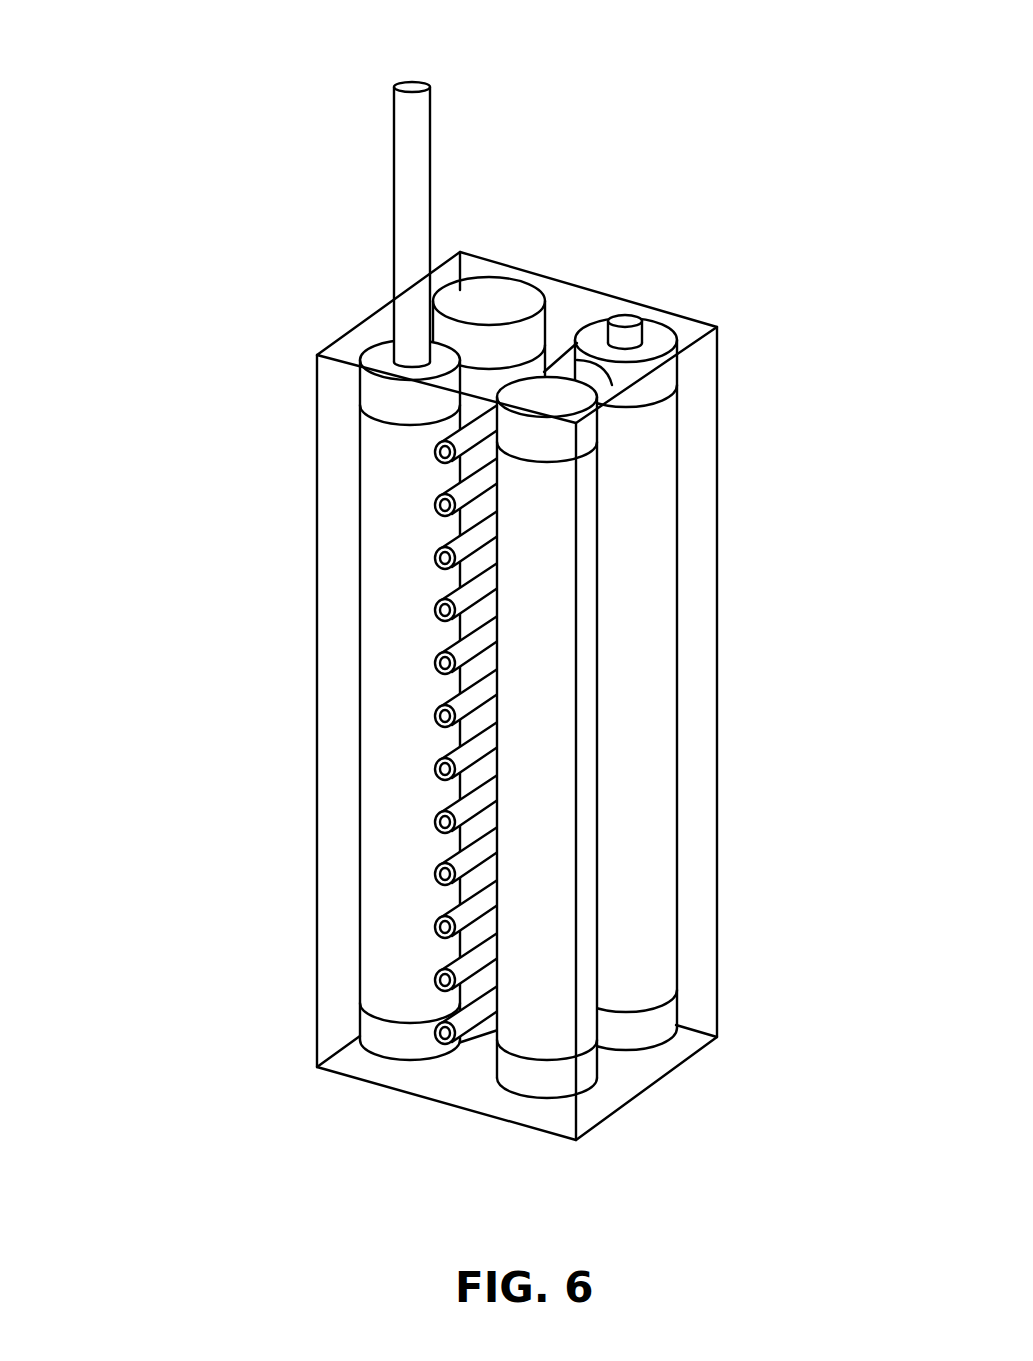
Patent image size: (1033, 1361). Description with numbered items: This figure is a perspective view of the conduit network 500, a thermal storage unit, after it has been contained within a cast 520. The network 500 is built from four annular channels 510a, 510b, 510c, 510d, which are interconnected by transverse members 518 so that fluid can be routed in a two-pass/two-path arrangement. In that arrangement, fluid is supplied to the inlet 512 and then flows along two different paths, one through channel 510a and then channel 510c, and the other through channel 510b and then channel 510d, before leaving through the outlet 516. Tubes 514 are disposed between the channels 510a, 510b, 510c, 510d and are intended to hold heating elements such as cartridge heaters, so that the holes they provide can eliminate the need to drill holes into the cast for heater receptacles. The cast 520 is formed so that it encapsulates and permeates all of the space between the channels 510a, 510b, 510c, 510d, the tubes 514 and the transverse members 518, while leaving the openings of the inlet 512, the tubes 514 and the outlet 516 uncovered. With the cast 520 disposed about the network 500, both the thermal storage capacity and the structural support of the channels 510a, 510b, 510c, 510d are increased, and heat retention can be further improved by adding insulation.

The conduit network 500 is at (182, 55).
The annular channel 510a is at (382, 853).
The annular channel 510b is at (488, 294).
The annular channel 510c is at (585, 1083).
The annular channel 510d is at (657, 1027).
The inlet 512 is at (407, 193).
The tubes 514 is at (435, 497).
The outlet 516 is at (626, 318).
The transverse members 518 is at (598, 376).
The cast 520 is at (702, 700).